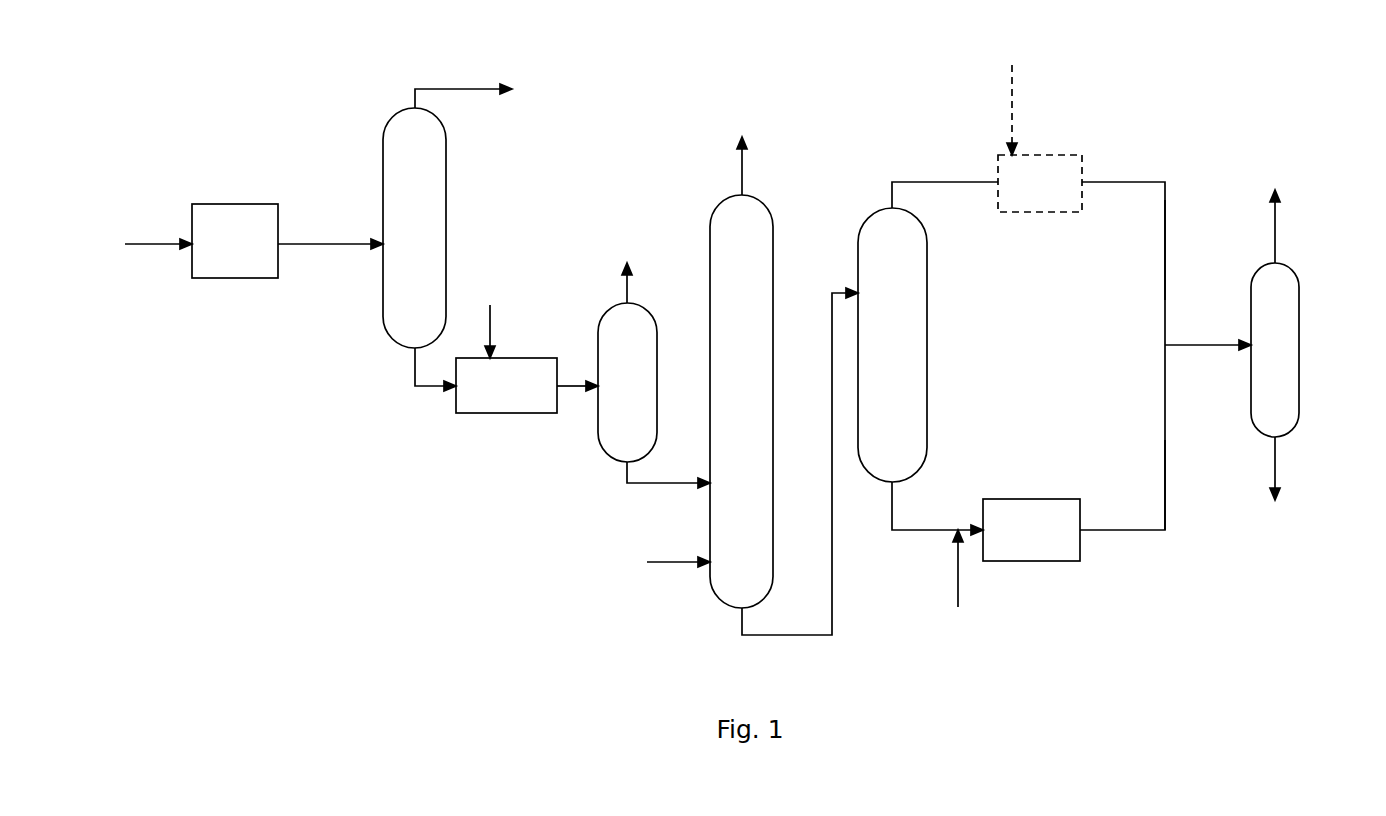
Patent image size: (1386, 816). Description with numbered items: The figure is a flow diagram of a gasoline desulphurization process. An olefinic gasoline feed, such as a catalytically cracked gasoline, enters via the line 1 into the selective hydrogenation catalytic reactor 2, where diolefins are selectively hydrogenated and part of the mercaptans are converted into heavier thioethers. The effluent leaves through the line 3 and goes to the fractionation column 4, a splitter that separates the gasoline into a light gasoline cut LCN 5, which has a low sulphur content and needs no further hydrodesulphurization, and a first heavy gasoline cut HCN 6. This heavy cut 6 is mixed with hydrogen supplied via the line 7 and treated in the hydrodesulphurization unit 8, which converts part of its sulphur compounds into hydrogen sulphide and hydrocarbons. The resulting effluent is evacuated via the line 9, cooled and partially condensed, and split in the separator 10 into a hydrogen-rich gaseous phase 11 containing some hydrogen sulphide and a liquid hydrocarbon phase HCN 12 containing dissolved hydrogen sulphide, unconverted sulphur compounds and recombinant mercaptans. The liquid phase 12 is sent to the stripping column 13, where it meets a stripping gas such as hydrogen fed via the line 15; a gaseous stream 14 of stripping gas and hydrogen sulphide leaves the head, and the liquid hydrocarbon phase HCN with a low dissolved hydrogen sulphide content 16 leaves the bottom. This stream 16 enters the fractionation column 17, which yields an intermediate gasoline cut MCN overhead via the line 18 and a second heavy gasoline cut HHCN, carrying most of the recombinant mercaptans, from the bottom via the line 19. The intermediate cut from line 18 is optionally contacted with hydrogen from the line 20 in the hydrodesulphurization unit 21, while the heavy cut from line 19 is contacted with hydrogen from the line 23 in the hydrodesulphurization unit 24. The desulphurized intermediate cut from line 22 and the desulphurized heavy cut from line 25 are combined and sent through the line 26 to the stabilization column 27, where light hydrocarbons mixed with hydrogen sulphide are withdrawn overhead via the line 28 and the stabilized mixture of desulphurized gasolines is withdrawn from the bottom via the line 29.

The line 1 is at (158, 245).
The selective hydrogenation catalytic reactor 2 is at (238, 203).
The line 3 is at (322, 245).
The fractionation column 4 is at (447, 175).
The light gasoline cut LCN 5 is at (458, 88).
The first heavy gasoline cut HCN 6 is at (433, 387).
The line 7 is at (492, 323).
The hydrodesulphurization unit 8 is at (505, 413).
The line 9 is at (575, 387).
The separator 10 is at (598, 332).
The gaseous phase 11 is at (627, 292).
The liquid hydrocarbon phase HCN 12 is at (660, 484).
The stripping column 13 is at (773, 287).
The gaseous stream 14 is at (742, 165).
The line 15 is at (698, 565).
The liquid hydrocarbon phase HCN with low dissolved hydrogen sulphide content 16 is at (832, 618).
The fractionation column 17 is at (927, 283).
The line 18 is at (892, 200).
The line 19 is at (907, 531).
The line 20 is at (1012, 100).
The hydrodesulphurization unit 21 is at (1037, 212).
The line 22 is at (1165, 250).
The line 23 is at (958, 587).
The hydrodesulphurization unit 24 is at (1040, 499).
The line 25 is at (1165, 475).
The line 26 is at (1208, 346).
The stabilization column 27 is at (1299, 363).
The line 28 is at (1275, 237).
The line 29 is at (1279, 448).